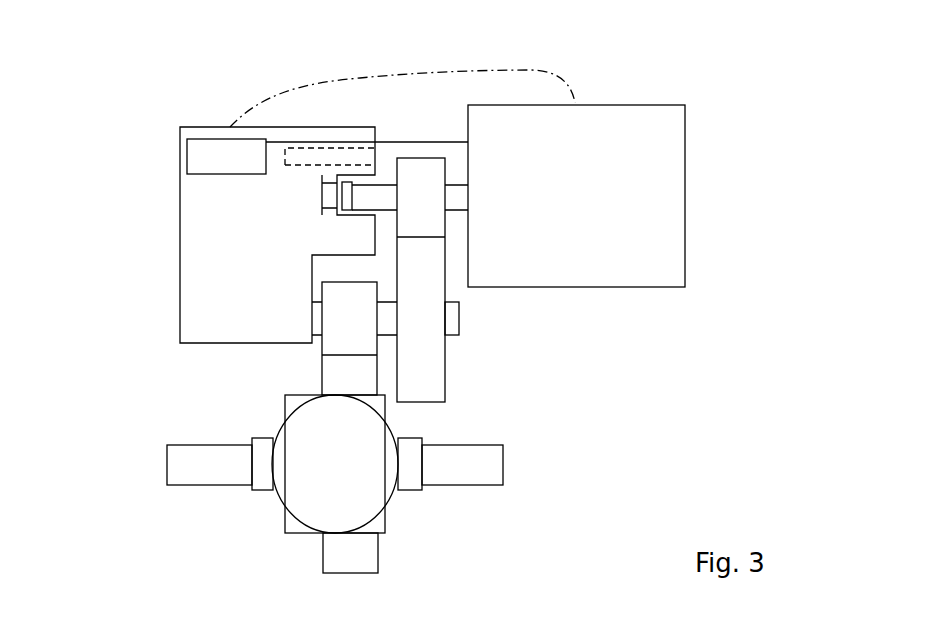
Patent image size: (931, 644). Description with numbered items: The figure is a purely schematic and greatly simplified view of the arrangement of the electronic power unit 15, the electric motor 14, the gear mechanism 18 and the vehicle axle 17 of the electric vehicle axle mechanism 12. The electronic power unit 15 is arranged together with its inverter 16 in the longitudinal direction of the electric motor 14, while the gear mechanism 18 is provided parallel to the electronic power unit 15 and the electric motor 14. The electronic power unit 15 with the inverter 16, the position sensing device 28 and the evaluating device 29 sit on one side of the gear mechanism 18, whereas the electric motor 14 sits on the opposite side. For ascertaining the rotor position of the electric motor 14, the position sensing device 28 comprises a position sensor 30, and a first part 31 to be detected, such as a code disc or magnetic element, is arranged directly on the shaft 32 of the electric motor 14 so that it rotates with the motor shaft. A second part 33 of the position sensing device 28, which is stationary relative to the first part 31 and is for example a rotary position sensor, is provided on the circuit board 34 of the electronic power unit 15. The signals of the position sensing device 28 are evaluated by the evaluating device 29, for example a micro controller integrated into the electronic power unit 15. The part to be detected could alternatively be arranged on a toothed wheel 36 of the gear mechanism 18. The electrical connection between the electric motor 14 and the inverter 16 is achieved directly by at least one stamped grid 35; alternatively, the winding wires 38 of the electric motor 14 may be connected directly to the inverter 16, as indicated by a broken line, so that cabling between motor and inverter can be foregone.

The electric vehicle axle mechanism 12 is at (128, 331).
The electric motor 14 is at (630, 114).
The electronic power unit 15 is at (158, 262).
The inverter 16 is at (200, 157).
The vehicle axle 17 is at (290, 497).
The gear mechanism 18 is at (262, 394).
The position sensing device 28 is at (328, 226).
The evaluating device 29 is at (310, 152).
The position sensor 30 is at (331, 197).
The first part of the position sensing device 31 is at (353, 197).
The shaft 32 is at (460, 197).
The second part of the position sensing device 33 is at (352, 223).
The circuit board 34 is at (202, 208).
The stamped grid 35 is at (425, 142).
The toothed wheel 36 is at (455, 383).
The winding wires 38 is at (428, 70).